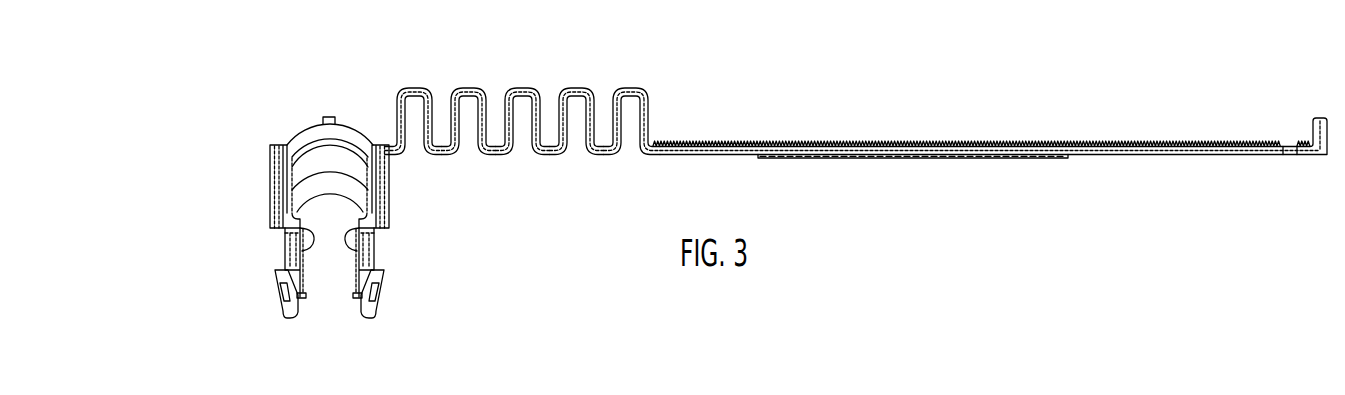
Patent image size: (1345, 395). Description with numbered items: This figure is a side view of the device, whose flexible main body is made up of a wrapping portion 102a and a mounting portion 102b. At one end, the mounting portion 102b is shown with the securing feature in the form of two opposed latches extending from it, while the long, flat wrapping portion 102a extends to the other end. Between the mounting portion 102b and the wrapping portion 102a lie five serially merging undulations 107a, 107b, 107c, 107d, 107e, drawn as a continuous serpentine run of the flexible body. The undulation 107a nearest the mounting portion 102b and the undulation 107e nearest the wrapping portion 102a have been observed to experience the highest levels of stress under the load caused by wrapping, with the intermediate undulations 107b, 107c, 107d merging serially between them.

The wrapping portion 102a is at (947, 159).
The mounting portion 102b is at (310, 133).
The undulation 107a is at (422, 88).
The undulation 107b is at (477, 87).
The undulation 107c is at (531, 88).
The undulation 107d is at (583, 87).
The undulation 107e is at (638, 87).